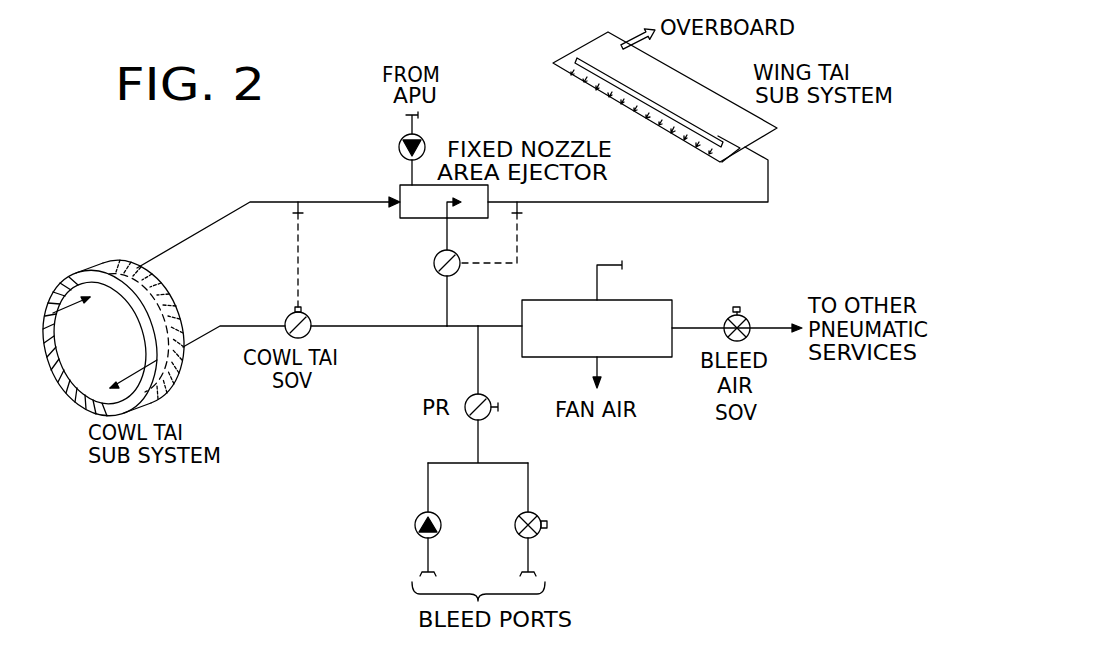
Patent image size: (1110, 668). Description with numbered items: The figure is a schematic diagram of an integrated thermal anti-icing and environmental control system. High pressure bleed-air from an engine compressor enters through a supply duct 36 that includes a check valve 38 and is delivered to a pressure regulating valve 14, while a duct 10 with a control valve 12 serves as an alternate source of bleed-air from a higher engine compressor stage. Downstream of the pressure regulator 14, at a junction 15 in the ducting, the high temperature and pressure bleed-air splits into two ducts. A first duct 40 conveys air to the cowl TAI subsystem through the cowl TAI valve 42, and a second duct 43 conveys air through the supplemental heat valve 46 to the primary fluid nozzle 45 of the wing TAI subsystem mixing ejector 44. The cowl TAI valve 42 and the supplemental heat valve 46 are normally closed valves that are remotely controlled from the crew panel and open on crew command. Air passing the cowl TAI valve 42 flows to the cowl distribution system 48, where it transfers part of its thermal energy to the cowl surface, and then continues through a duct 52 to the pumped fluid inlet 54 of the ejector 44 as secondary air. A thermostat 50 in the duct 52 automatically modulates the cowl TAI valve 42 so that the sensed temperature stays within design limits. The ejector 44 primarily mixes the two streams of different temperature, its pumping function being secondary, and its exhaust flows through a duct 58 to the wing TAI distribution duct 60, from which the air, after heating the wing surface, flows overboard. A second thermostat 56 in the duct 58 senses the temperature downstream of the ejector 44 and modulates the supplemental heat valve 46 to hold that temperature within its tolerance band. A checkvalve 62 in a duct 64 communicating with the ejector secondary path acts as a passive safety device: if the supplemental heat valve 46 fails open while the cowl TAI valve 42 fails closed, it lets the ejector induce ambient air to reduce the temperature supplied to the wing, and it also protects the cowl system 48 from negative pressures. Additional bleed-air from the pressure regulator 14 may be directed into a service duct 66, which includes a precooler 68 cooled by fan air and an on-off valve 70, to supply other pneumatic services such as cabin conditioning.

The duct 10 is at (530, 557).
The control valve 12 is at (537, 512).
The pressure regulating valve 14 is at (487, 423).
The junction 15 is at (438, 330).
The supply duct 36 is at (428, 550).
The check valve 38 is at (418, 513).
The first duct 40 is at (373, 328).
The cowl TAI valve 42 is at (290, 308).
The second duct 43 is at (445, 295).
The mixing ejector 44 is at (410, 220).
The primary fluid nozzle 45 is at (458, 208).
The supplemental heat valve 46 is at (432, 265).
The cowl distribution system 48 is at (73, 377).
The thermostat 50 is at (293, 210).
The duct 52 is at (218, 215).
The pumped fluid inlet 54 is at (397, 187).
The second thermostat 56 is at (527, 210).
The duct 58 is at (697, 203).
The wing TAI distribution duct 60 is at (665, 107).
The checkvalve 62 is at (400, 133).
The duct 64 is at (410, 168).
The service duct 66 is at (487, 325).
The precooler 68 is at (597, 324).
The on-off valve 70 is at (748, 313).